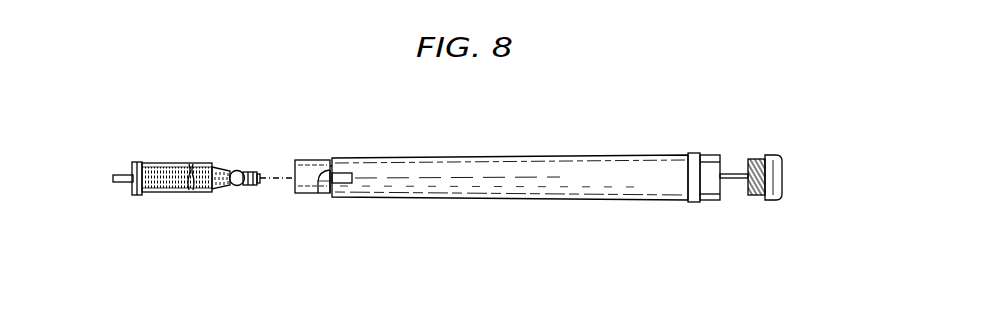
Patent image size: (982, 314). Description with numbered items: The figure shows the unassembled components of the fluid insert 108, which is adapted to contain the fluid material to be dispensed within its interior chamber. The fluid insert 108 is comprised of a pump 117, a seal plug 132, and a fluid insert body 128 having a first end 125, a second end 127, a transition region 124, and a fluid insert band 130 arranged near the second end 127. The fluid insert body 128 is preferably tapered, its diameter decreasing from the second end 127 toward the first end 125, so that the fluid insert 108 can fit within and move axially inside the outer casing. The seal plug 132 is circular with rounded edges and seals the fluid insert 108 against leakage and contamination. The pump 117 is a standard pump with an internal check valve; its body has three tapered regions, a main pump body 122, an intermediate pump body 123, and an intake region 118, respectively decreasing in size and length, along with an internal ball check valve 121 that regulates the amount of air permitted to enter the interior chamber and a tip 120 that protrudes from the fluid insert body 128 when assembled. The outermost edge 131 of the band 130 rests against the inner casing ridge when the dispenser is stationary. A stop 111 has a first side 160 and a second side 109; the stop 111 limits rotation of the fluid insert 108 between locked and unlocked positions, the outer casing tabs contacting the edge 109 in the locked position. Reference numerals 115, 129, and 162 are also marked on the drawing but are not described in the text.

The fluid insert 108 is at (564, 110).
The second side of the stop 109 is at (338, 159).
The stop 111 is at (316, 183).
The plunger stopper 115 is at (175, 165).
The pump 117 is at (170, 150).
The intake region 118 is at (252, 187).
The tip 120 is at (121, 175).
The internal ball check valve 121 is at (233, 172).
The main pump body 122 is at (162, 194).
The intermediate pump body 123 is at (217, 192).
The transition region 124 is at (300, 160).
The first end 125 is at (294, 173).
The second end 127 is at (725, 162).
The fluid insert body 128 is at (572, 157).
The end portion 129 is at (687, 173).
The fluid insert band 130 is at (692, 153).
The outermost edge of the band 131 is at (701, 188).
The seal plug 132 is at (778, 150).
The first side of the stop 160 is at (331, 183).
The opening 162 is at (327, 165).